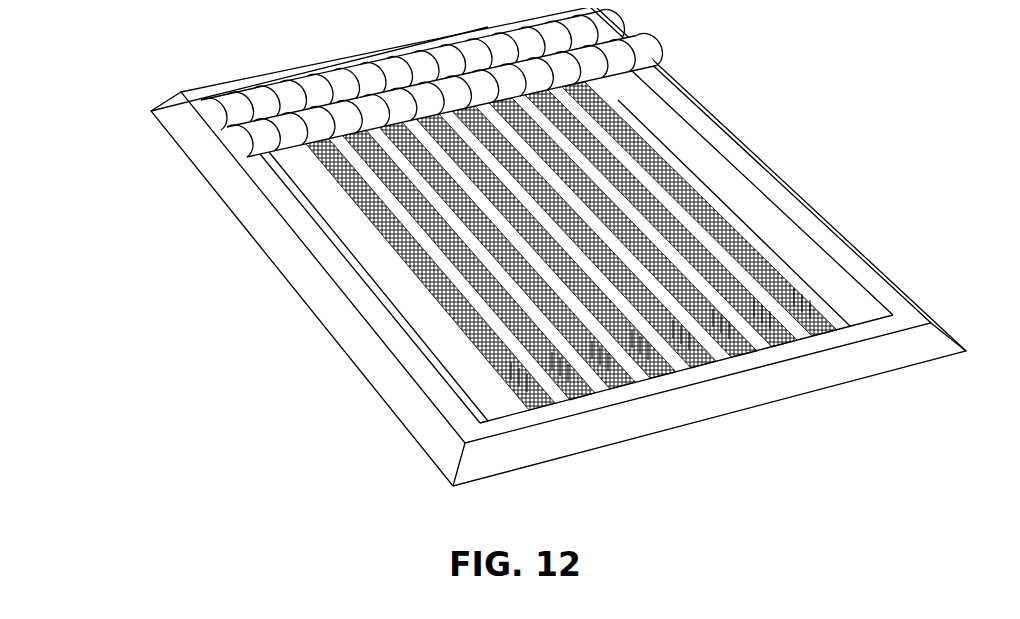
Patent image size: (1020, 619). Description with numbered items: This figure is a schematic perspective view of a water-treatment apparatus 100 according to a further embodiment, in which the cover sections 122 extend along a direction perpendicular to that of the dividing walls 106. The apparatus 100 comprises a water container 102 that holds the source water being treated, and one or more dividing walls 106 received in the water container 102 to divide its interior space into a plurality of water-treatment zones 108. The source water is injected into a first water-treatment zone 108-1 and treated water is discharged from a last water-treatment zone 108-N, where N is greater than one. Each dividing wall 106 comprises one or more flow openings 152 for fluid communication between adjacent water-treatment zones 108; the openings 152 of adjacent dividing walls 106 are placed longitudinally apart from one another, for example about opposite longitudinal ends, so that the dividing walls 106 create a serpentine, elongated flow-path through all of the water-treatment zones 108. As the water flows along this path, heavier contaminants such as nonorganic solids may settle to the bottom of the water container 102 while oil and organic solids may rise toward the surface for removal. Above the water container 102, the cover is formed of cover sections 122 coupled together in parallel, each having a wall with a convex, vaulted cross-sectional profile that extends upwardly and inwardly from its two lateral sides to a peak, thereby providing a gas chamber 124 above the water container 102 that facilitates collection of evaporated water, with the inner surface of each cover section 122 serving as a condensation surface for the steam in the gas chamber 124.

The water-treatment apparatus 100 is at (503, 247).
The water container 102 is at (224, 207).
The dividing wall 106 is at (478, 323).
The water-treatment zone 108 is at (628, 360).
The first water-treatment zone 108-1 is at (390, 287).
The last water-treatment zone 108-N is at (735, 172).
The cover section 122 is at (398, 42).
The gas chamber 124 is at (226, 137).
The flow opening 152 is at (506, 380).